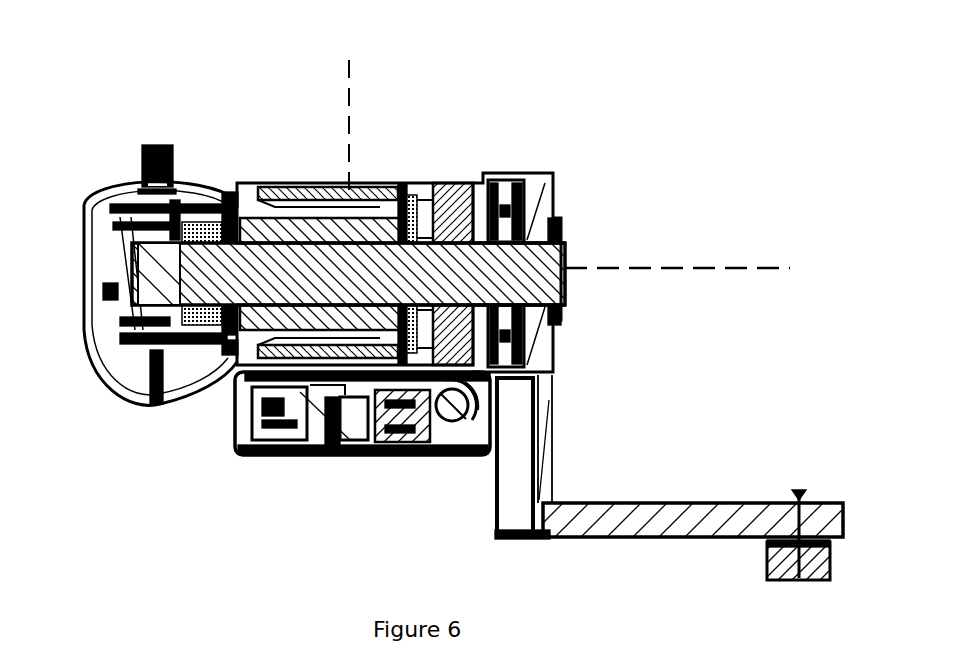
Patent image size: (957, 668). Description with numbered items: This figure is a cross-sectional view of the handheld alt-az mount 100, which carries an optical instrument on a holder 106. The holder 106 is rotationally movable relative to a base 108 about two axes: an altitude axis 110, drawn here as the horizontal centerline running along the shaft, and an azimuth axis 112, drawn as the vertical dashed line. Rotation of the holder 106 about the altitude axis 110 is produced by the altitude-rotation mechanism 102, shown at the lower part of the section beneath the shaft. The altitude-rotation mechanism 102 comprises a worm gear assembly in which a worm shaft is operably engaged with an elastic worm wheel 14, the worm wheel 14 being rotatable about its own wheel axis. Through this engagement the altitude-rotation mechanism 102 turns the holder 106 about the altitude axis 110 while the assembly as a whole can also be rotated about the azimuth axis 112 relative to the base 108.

The handheld alt-az mount 100 is at (135, 102).
The altitude-rotation mechanism 102 is at (462, 452).
The holder 106 is at (700, 503).
The base 108 is at (258, 183).
The altitude axis 110 is at (712, 262).
The azimuth axis 112 is at (352, 78).
The elastic worm wheel 14 is at (410, 200).